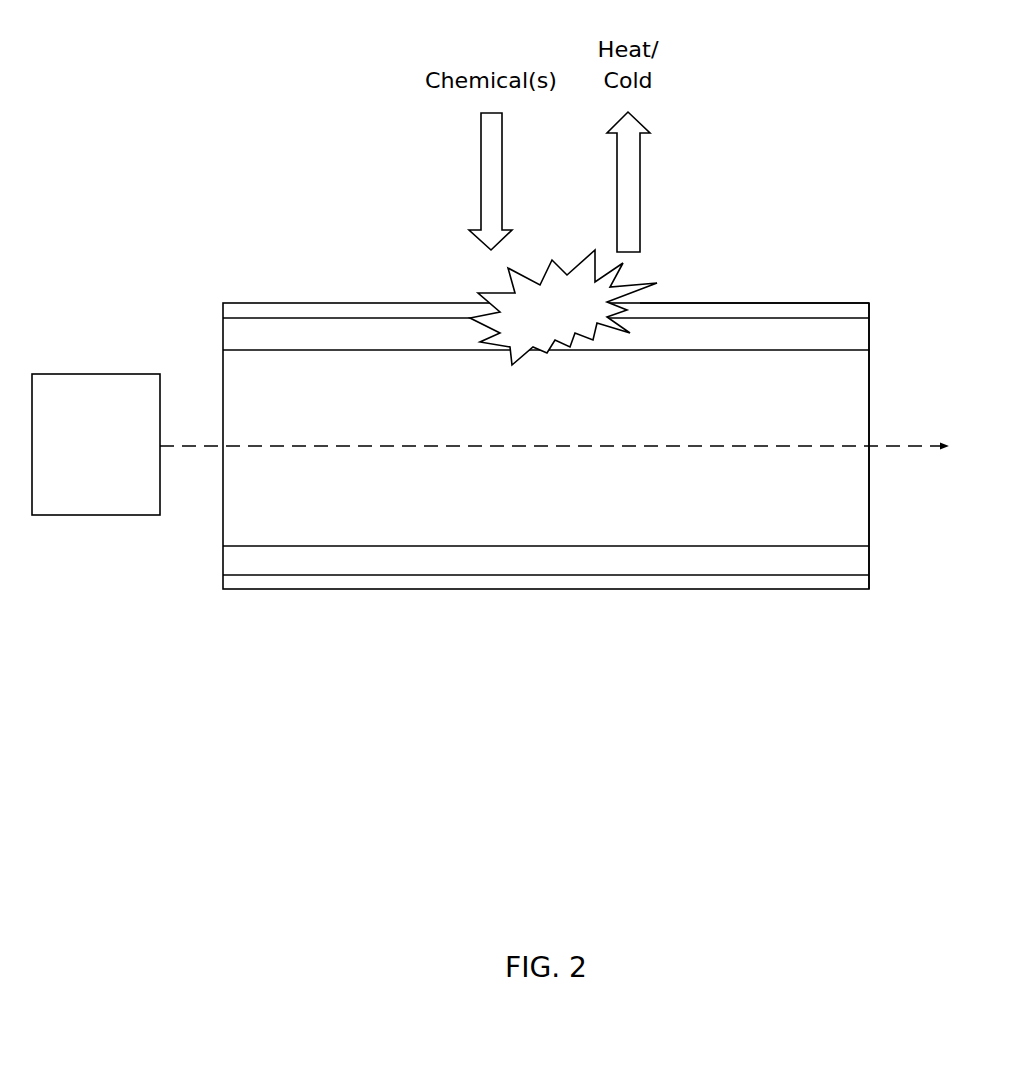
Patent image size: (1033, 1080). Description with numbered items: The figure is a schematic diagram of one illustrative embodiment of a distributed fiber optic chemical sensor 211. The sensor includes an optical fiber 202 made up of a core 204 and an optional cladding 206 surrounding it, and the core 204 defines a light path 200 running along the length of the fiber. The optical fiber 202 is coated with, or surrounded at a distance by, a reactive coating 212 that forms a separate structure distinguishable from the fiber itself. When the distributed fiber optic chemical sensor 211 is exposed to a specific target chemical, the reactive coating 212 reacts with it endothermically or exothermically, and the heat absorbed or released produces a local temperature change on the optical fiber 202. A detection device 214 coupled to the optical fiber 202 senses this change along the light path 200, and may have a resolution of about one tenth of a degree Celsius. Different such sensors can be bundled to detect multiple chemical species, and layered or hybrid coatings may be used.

The light path 200 is at (192, 432).
The optical fiber 202 is at (375, 288).
The core 204 is at (273, 396).
The cladding 206 is at (325, 336).
The distributed fiber optic chemical sensor 211 is at (425, 248).
The reactive coating 212 is at (760, 292).
The detection device 214 is at (96, 444).